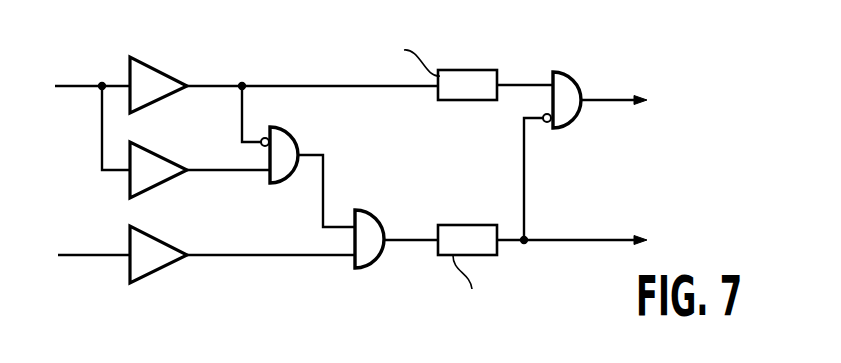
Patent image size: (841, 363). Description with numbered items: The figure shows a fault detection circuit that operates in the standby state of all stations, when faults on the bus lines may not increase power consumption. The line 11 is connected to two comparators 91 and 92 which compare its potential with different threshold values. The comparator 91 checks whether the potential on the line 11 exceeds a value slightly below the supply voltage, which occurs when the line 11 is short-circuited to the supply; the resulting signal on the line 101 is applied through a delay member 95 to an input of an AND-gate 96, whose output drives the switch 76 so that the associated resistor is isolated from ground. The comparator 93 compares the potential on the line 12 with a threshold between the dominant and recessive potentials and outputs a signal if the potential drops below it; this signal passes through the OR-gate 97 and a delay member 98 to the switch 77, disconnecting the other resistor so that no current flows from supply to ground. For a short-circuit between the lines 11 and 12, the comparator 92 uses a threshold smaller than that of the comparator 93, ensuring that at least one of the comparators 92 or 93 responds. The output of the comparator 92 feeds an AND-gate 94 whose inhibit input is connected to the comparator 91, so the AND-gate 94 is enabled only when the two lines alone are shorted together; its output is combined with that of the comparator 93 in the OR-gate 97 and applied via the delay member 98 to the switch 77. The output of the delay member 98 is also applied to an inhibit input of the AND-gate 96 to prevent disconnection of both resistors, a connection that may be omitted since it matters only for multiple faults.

The line 11 is at (73, 85).
The line 12 is at (85, 253).
The comparator 91 is at (163, 73).
The comparator 92 is at (160, 152).
The comparator 93 is at (160, 240).
The AND-gate 94 is at (300, 138).
The delay member 95 is at (462, 101).
The AND-gate 96 is at (578, 90).
The OR-gate 97 is at (385, 222).
The delay member 98 is at (458, 222).
The line 101 is at (368, 87).
The switch 76 is at (668, 101).
The switch 77 is at (671, 244).